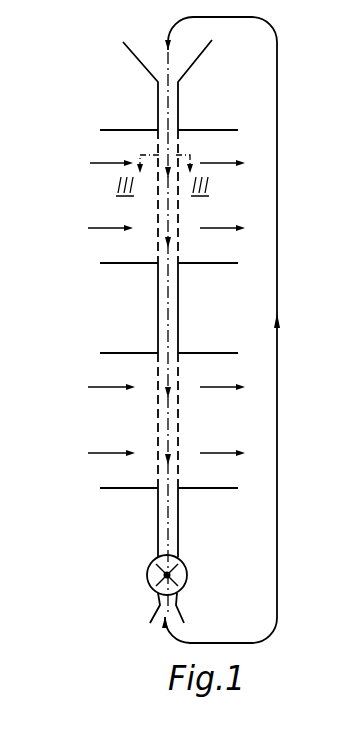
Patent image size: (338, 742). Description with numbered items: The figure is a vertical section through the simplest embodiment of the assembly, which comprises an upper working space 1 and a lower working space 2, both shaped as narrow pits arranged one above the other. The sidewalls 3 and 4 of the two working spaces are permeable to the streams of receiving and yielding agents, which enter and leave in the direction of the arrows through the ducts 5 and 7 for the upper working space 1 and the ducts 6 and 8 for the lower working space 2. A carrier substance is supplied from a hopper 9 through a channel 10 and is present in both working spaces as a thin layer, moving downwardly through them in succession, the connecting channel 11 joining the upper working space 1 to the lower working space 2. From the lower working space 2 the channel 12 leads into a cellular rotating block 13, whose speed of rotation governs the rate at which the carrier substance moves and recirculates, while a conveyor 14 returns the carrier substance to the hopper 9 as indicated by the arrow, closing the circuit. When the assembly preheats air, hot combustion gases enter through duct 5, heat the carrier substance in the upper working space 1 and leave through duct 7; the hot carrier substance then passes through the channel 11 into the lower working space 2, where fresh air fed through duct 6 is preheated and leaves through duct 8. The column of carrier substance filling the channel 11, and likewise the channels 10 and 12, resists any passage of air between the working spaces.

The upper working space 1 is at (168, 208).
The lower working space 2 is at (168, 427).
The sidewall 3 is at (126, 196).
The sidewall 4 is at (128, 420).
The duct 5 is at (124, 193).
The duct 6 is at (111, 410).
The duct 7 is at (210, 193).
The duct 8 is at (222, 409).
The hopper 9 is at (137, 62).
The channel 10 is at (167, 102).
The connecting channel 11 is at (168, 317).
The channel 12 is at (168, 530).
The cellular rotating block 13 is at (147, 575).
The conveyor 14 is at (278, 347).